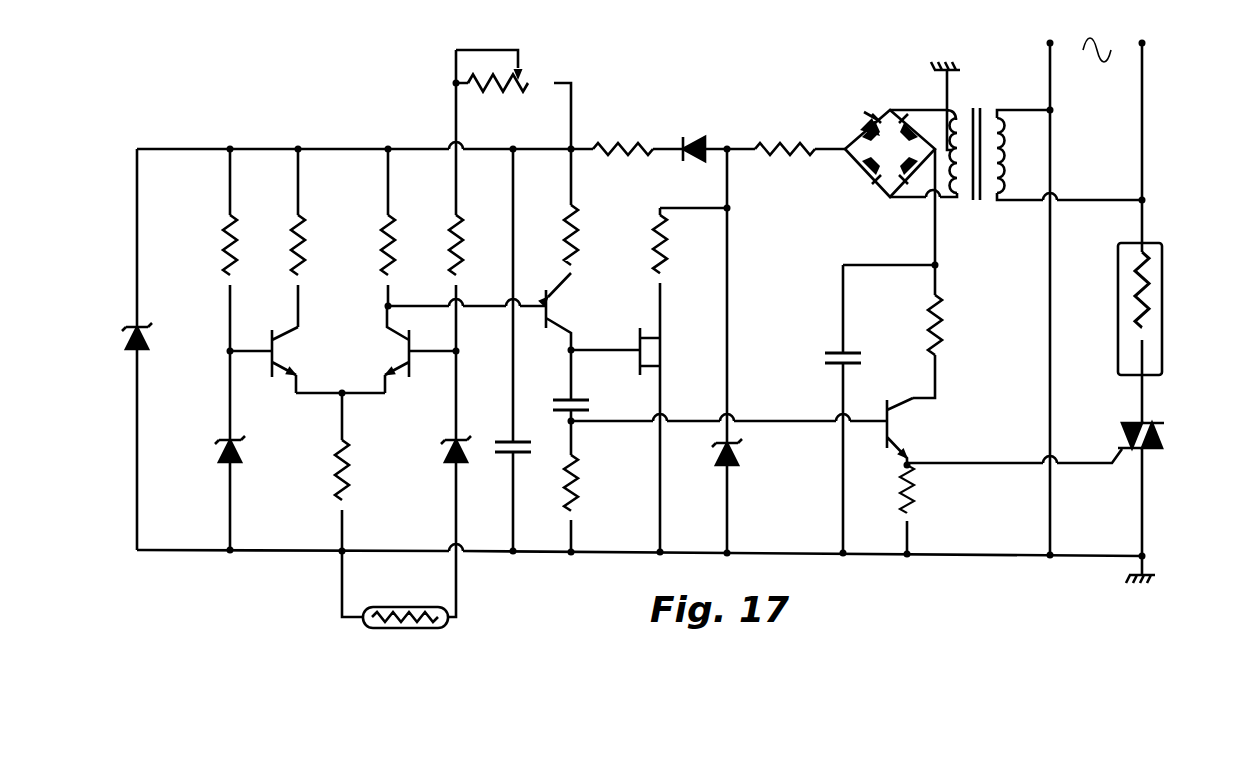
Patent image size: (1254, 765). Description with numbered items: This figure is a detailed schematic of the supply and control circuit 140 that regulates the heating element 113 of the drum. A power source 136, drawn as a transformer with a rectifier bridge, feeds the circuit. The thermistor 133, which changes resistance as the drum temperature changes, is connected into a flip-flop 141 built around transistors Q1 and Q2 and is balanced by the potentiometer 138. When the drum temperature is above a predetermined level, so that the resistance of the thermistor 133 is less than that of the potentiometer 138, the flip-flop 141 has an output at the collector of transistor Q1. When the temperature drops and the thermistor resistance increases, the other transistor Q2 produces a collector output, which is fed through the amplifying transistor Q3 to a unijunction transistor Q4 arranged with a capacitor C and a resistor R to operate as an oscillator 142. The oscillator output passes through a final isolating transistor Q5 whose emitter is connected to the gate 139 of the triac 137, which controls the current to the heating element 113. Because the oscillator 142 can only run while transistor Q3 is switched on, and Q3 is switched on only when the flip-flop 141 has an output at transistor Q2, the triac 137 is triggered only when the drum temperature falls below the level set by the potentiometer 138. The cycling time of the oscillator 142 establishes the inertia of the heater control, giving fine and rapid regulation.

The heating element 113 is at (1149, 276).
The thermistor 133 is at (435, 607).
The power source 136 is at (990, 108).
The triac 137 is at (1158, 450).
The potentiometer 138 is at (530, 62).
The gate 139 is at (920, 464).
The control circuit 140 is at (655, 122).
The flip-flop 141 is at (342, 252).
The oscillator 142 is at (689, 292).
The transistor Q1 is at (272, 335).
The transistor Q2 is at (405, 351).
The amplifying transistor Q3 is at (545, 299).
The unijunction transistor Q4 is at (648, 351).
The isolating transistor Q5 is at (887, 408).
The capacitor C is at (590, 402).
The resistor R is at (579, 487).